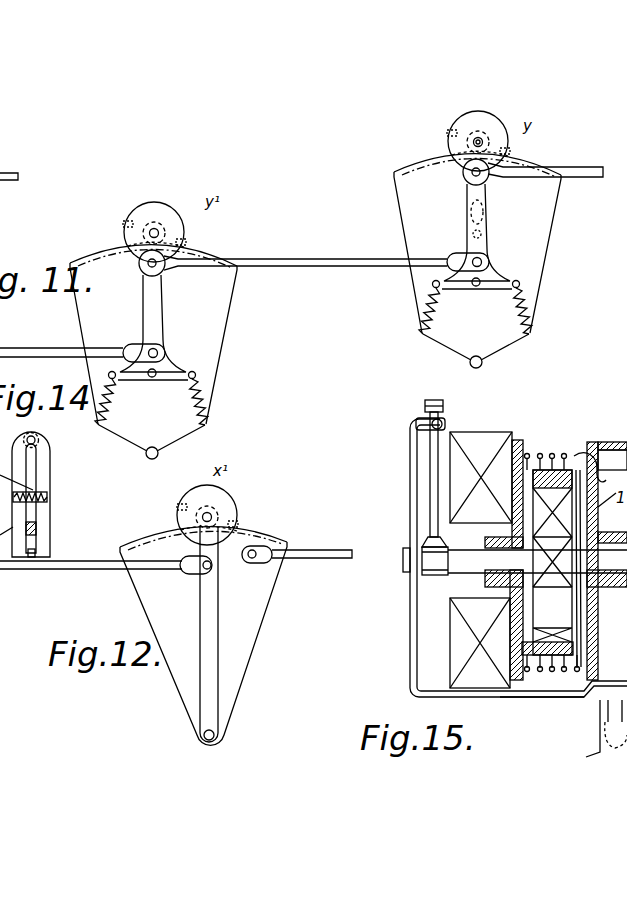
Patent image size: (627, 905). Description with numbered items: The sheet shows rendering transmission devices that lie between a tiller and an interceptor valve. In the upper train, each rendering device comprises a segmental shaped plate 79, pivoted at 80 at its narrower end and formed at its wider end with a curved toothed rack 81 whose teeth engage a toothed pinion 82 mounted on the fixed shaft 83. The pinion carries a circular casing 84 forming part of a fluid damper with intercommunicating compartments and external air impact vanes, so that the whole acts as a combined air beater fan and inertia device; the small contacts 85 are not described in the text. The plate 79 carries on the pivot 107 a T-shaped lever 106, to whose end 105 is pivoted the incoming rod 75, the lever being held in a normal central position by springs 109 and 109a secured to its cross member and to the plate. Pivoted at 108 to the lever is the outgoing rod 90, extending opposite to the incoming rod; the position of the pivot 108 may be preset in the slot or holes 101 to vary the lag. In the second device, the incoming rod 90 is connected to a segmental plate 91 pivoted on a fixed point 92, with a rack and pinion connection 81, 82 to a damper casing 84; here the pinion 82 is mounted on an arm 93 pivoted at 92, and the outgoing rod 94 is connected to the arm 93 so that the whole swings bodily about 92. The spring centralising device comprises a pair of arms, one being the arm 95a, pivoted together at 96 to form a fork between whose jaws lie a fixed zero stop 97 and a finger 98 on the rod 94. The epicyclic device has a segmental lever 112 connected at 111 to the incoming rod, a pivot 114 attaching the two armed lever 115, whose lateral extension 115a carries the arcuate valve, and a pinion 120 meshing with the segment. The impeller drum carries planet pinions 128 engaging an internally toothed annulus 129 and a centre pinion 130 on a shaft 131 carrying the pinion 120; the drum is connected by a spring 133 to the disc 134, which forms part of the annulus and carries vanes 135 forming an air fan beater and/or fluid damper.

In FIG. 14, the incoming rod 75 is at (580, 167).
In FIG. 14, the segmental shaped plate 79 is at (222, 323).
In FIG. 14, the pivot 80 is at (160, 454).
In FIG. 14, the curved toothed rack 81 is at (78, 261).
In FIG. 12, the curved toothed rack 81 is at (273, 536).
In FIG. 14, the toothed pinion 82 is at (160, 221).
In FIG. 12, the toothed pinion 82 is at (221, 516).
In FIG. 14, the fixed shaft 83 is at (471, 109).
In FIG. 14, the circular casing 84 is at (138, 204).
In FIG. 12, the circular casing 84 is at (228, 499).
In FIG. 14, the contact 85 is at (122, 224).
In FIG. 14, the outgoing rod 90 is at (383, 263).
In FIG. 12, the outgoing rod 90 is at (322, 548).
In FIG. 12, the segmental plate 91 is at (250, 645).
In FIG. 12, the fixed point 92 is at (218, 736).
In FIG. 12, the arm 93 is at (200, 610).
In FIG. 12, the outgoing rod 94 is at (113, 570).
In FIG. 14, the arm 95a is at (44, 526).
In FIG. 14, the pivot 96 is at (38, 437).
In FIG. 14, the fixed zero stop 97 is at (36, 521).
In FIG. 14, the finger 98 is at (47, 551).
In FIG. 14, the series of holes 101 is at (505, 219).
In FIG. 14, the end of lever 105 is at (146, 264).
In FIG. 14, the T-shaped lever 106 is at (161, 285).
In FIG. 14, the pivot 107 is at (153, 381).
In FIG. 14, the pivot 108 is at (160, 350).
In FIG. 14, the spring 109 is at (113, 401).
In FIG. 14, the spring 109a is at (208, 401).
In FIG. 15, the pivot 111 is at (437, 400).
In FIG. 15, the segmental lever 112 is at (437, 445).
In FIG. 15, the pivot 114 is at (428, 420).
In FIG. 15, the two armed lever 115 is at (411, 503).
In FIG. 15, the lateral extension of lever arm 115a is at (530, 697).
In FIG. 15, the pinion 120 is at (430, 576).
In FIG. 15, the planet pinions 128 is at (575, 460).
In FIG. 15, the internally toothed annulus 129 is at (549, 452).
In FIG. 15, the centre pinion 130 is at (558, 585).
In FIG. 15, the shaft 131 is at (465, 558).
In FIG. 15, the spring 133 is at (547, 670).
In FIG. 15, the disc 134 is at (510, 618).
In FIG. 15, the vanes 135 is at (495, 440).